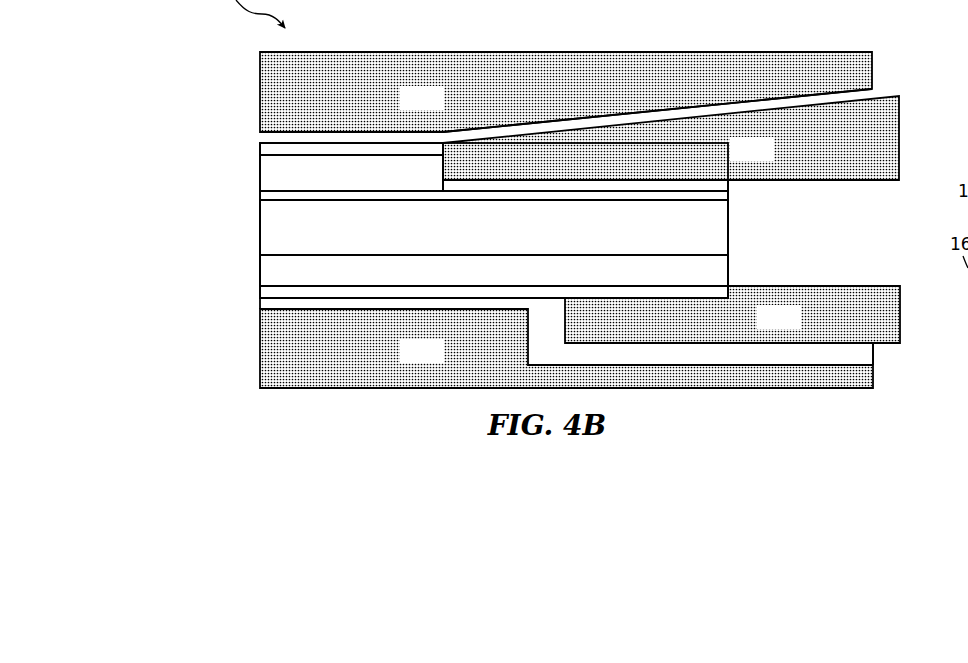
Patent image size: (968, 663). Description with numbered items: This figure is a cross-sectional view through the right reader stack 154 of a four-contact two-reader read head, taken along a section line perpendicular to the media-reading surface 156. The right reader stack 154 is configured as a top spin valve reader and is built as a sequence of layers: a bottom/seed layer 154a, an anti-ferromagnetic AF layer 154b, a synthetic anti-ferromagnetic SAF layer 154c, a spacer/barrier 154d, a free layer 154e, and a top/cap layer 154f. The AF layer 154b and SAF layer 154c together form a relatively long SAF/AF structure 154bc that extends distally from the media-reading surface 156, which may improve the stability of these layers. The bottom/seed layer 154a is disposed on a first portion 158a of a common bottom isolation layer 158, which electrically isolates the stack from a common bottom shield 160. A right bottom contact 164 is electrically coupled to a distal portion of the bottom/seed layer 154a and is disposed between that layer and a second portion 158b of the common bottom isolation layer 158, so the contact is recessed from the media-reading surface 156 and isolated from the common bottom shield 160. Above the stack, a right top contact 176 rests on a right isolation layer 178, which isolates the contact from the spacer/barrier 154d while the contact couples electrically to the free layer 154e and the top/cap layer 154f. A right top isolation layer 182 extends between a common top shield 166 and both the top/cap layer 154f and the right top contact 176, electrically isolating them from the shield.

The right reader stack 154 is at (251, 143).
The bottom/seed layer 154a is at (277, 292).
The AF layer 154b is at (514, 281).
The SAF layer 154c is at (548, 237).
The SAF/AF structure 154bc is at (737, 201).
The spacer/barrier 154d is at (275, 197).
The free layer 154e is at (329, 185).
The top/cap layer 154f is at (278, 150).
The media-reading surface 156 is at (228, 357).
The common bottom isolation layer 158 is at (533, 362).
The first portion of common bottom isolation layer 158a is at (275, 303).
The second portion of common bottom isolation layer 158b is at (850, 353).
The common bottom shield 160 is at (438, 361).
The right bottom contact 164 is at (794, 327).
The common top shield 166 is at (437, 108).
The right top contact 176 is at (736, 159).
The right isolation layer 178 is at (715, 183).
The right top isolation layer 182 is at (302, 138).